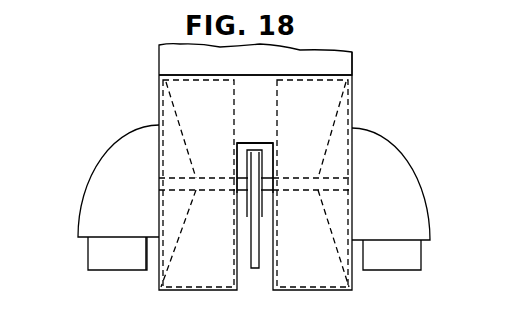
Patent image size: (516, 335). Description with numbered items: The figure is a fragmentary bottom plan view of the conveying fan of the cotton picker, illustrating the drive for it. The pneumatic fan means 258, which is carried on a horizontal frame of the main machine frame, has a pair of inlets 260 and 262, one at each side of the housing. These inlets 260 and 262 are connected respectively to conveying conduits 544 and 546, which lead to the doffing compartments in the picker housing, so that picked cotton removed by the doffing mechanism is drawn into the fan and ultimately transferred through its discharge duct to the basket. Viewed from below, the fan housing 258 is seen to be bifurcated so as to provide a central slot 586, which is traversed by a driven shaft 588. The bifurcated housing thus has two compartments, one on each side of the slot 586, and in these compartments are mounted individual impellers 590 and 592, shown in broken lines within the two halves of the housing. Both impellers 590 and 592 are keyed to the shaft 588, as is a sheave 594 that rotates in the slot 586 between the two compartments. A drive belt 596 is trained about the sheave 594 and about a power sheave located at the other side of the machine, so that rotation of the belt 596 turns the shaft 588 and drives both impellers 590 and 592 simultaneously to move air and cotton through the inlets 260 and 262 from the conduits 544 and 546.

The pneumatic fan means 258 is at (352, 82).
The inlet 260 is at (418, 203).
The inlet 262 is at (97, 190).
The conveying conduit 544 is at (410, 258).
The conveying conduit 546 is at (102, 265).
The slot 586 is at (245, 143).
The driven shaft 588 is at (265, 178).
The impeller 590 is at (325, 84).
The impeller 592 is at (190, 82).
The sheave 594 is at (247, 207).
The drive belt 596 is at (255, 272).